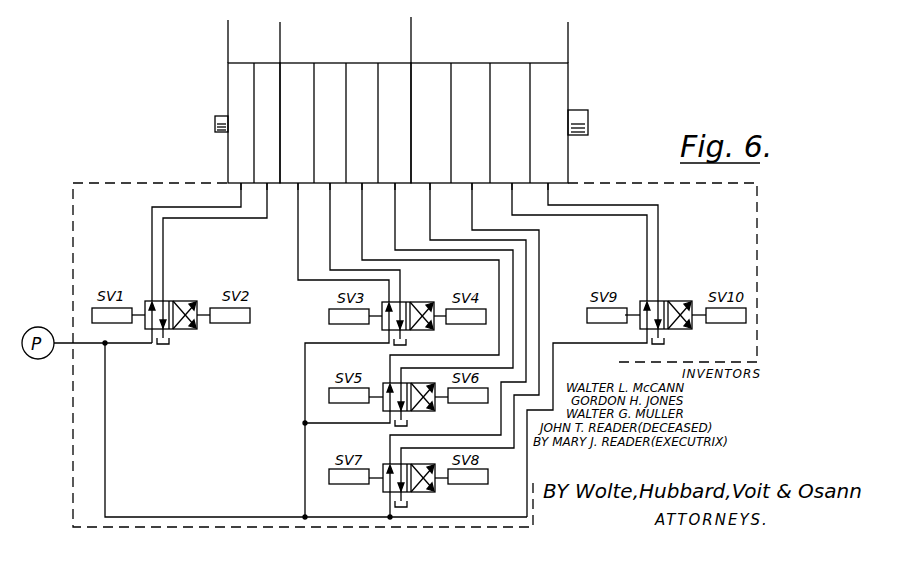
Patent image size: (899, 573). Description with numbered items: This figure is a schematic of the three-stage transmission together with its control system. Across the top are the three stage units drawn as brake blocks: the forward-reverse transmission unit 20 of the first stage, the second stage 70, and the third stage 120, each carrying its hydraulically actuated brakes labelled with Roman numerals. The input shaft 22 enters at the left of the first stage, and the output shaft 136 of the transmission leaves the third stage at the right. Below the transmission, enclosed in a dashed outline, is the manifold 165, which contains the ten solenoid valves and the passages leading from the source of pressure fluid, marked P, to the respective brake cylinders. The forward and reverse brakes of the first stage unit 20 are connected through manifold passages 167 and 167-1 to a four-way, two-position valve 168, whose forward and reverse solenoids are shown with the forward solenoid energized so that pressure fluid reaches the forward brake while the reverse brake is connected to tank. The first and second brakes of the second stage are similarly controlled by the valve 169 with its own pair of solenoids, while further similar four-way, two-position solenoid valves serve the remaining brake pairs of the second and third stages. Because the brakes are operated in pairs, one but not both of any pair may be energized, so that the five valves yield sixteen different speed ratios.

The forward-reverse transmission unit 20 is at (257, 16).
The second stage 70 is at (338, 22).
The third stage 120 is at (487, 21).
The input shaft 22 is at (215, 123).
The output shaft 136 is at (583, 118).
The manifold 165 is at (70, 408).
The manifold passage 167 is at (152, 251).
The manifold passage 167-1 is at (165, 240).
The 4-way, 2-position valve 168 is at (185, 329).
The valve 169 is at (412, 302).